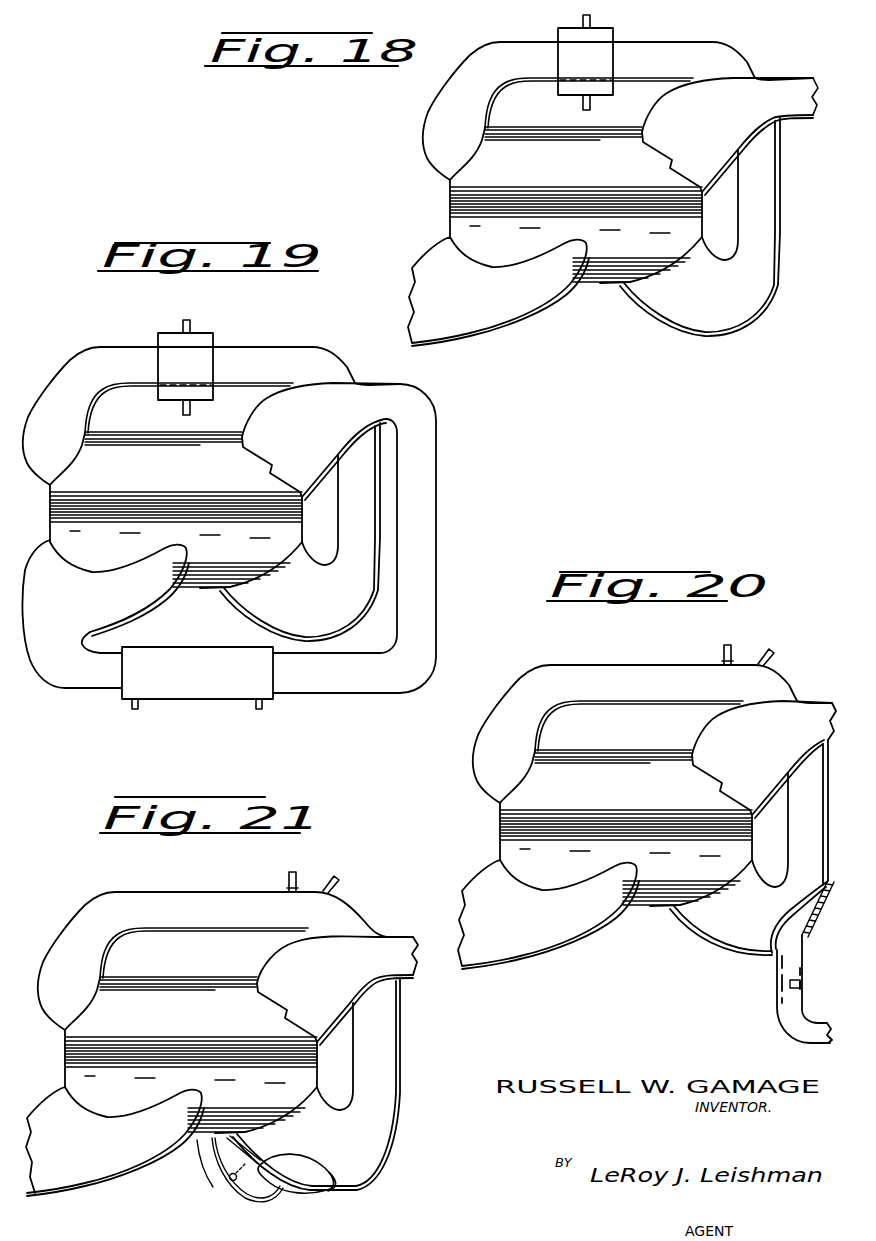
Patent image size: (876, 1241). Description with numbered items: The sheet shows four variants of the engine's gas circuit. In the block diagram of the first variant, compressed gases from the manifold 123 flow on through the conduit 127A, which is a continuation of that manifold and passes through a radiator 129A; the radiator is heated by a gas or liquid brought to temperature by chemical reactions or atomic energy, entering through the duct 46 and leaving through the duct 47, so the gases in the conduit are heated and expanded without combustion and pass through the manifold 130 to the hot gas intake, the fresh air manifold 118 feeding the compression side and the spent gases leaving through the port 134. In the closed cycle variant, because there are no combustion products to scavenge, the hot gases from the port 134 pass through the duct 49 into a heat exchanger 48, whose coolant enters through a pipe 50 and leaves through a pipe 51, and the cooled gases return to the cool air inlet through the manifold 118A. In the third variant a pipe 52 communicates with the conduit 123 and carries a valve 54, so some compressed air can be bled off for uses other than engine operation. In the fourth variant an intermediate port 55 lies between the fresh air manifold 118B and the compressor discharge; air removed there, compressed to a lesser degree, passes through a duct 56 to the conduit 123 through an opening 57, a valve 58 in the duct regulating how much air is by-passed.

In FIG. 18, the duct 46 is at (590, 103).
In FIG. 19, the duct 46 is at (205, 409).
In FIG. 18, the duct 47 is at (592, 20).
In FIG. 19, the duct 47 is at (208, 324).
In FIG. 19, the heat exchanger 48 is at (197, 673).
In FIG. 19, the duct 49 is at (229, 538).
In FIG. 19, the pipe 50 is at (278, 707).
In FIG. 19, the pipe 51 is at (159, 709).
In FIG. 20, the pipe 52 is at (781, 989).
In FIG. 20, the valve 54 is at (770, 934).
In FIG. 21, the port 55 is at (174, 1175).
In FIG. 21, the duct 56 is at (233, 1171).
In FIG. 21, the opening 57 is at (297, 1189).
In FIG. 21, the valve 58 is at (231, 1197).
In FIG. 18, the fresh air manifold 118 is at (480, 307).
In FIG. 19, the manifold 118A is at (119, 589).
In FIG. 21, the fresh air manifold 118B is at (115, 1141).
In FIG. 18, the manifold 123 is at (730, 305).
In FIG. 19, the manifold 123 is at (300, 532).
In FIG. 20, the manifold 123 is at (749, 847).
In FIG. 21, the manifold 123 is at (316, 1084).
In FIG. 18, the conduit 127A is at (545, 71).
In FIG. 19, the conduit 127A is at (239, 366).
In FIG. 18, the radiator 129A is at (605, 69).
In FIG. 19, the radiator 129A is at (185, 366).
In FIG. 18, the manifold 130 is at (468, 149).
In FIG. 19, the manifold 130 is at (61, 416).
In FIG. 18, the port 134 is at (710, 132).
In FIG. 19, the port 134 is at (321, 441).